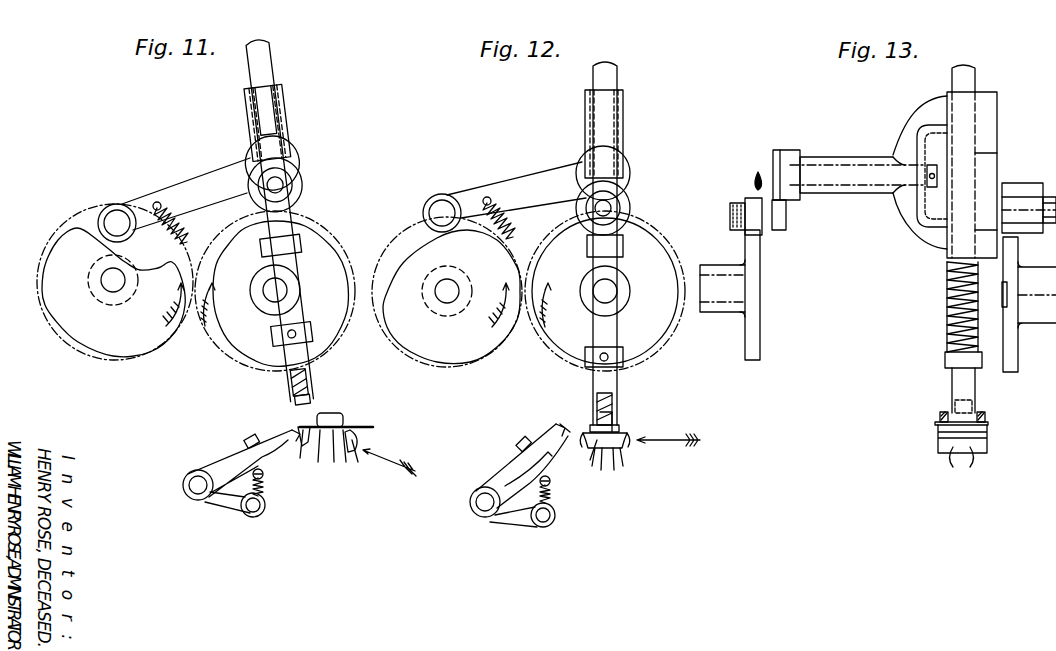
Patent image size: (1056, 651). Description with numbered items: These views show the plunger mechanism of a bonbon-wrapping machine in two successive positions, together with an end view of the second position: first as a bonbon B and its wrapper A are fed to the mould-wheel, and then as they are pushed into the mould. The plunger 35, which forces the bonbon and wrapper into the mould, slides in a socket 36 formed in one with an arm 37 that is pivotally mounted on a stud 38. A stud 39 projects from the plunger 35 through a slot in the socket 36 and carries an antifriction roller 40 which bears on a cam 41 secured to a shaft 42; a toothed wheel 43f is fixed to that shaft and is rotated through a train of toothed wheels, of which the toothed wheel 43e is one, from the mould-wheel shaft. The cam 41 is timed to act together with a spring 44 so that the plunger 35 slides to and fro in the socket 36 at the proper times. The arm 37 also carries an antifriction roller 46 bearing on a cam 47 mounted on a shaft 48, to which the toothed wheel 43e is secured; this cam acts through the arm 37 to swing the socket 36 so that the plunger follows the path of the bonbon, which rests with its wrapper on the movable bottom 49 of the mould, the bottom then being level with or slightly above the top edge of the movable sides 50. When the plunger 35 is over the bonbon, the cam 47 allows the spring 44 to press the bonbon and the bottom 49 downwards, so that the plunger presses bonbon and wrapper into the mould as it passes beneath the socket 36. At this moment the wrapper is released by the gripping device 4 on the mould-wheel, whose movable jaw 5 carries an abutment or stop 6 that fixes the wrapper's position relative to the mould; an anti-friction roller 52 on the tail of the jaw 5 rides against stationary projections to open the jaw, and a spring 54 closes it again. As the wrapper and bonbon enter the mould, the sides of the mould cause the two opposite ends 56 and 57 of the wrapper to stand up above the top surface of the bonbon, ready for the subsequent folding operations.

In FIG. 11, the plunger 35 is at (272, 65).
In FIG. 12, the plunger 35 is at (608, 77).
In FIG. 13, the plunger 35 is at (970, 78).
In FIG. 11, the socket 36 is at (283, 105).
In FIG. 12, the socket 36 is at (623, 117).
In FIG. 13, the socket 36 is at (990, 113).
In FIG. 11, the arm 37 is at (186, 194).
In FIG. 12, the arm 37 is at (516, 190).
In FIG. 13, the arm 37 is at (780, 208).
In FIG. 11, the stud 38 is at (295, 158).
In FIG. 12, the stud 38 is at (630, 160).
In FIG. 13, the stud 38 is at (768, 160).
In FIG. 11, the stud 39 is at (278, 186).
In FIG. 12, the stud 39 is at (600, 208).
In FIG. 13, the stud 39 is at (1028, 218).
In FIG. 11, the antifriction roller 40 is at (298, 183).
In FIG. 12, the antifriction roller 40 is at (630, 202).
In FIG. 13, the antifriction roller 40 is at (1015, 187).
In FIG. 11, the cam 41 is at (280, 293).
In FIG. 12, the cam 41 is at (605, 291).
In FIG. 13, the cam 41 is at (1015, 362).
In FIG. 11, the shaft 42 is at (267, 295).
In FIG. 12, the shaft 42 is at (600, 295).
In FIG. 11, the toothed wheel 43e is at (38, 262).
In FIG. 12, the toothed wheel 43e is at (391, 235).
In FIG. 11, the toothed wheel 43f is at (210, 343).
In FIG. 12, the toothed wheel 43f is at (665, 342).
In FIG. 13, the spring 44 is at (948, 313).
In FIG. 11, the antifriction roller 46 is at (118, 206).
In FIG. 12, the antifriction roller 46 is at (442, 198).
In FIG. 13, the antifriction roller 46 is at (750, 200).
In FIG. 11, the cam 47 is at (113, 292).
In FIG. 12, the cam 47 is at (451, 297).
In FIG. 13, the cam 47 is at (758, 340).
In FIG. 11, the shaft 48 is at (108, 280).
In FIG. 12, the shaft 48 is at (449, 284).
In FIG. 13, the shaft 48 is at (752, 292).
In FIG. 11, the movable bottom 49 is at (320, 463).
In FIG. 12, the movable bottom 49 is at (603, 460).
In FIG. 11, the movable sides 50 is at (302, 428).
In FIG. 12, the movable sides 50 is at (590, 433).
In FIG. 13, the movable sides 50 is at (938, 440).
In FIG. 12, the gripping device 4 is at (532, 469).
In FIG. 11, the movable jaw 5 is at (235, 460).
In FIG. 12, the movable jaw 5 is at (513, 472).
In FIG. 11, the abutment 6 is at (288, 447).
In FIG. 12, the abutment 6 is at (550, 437).
In FIG. 11, the anti-friction roller 52 is at (262, 511).
In FIG. 12, the anti-friction roller 52 is at (553, 523).
In FIG. 11, the spring 54 is at (262, 489).
In FIG. 12, the spring 54 is at (552, 497).
In FIG. 12, the rear upstanding end 56 is at (618, 424).
In FIG. 12, the upstanding end 57 is at (589, 426).
In FIG. 11, the wrapper A is at (358, 423).
In FIG. 11, the bonbon B is at (330, 413).
In FIG. 12, the bonbon B is at (597, 442).